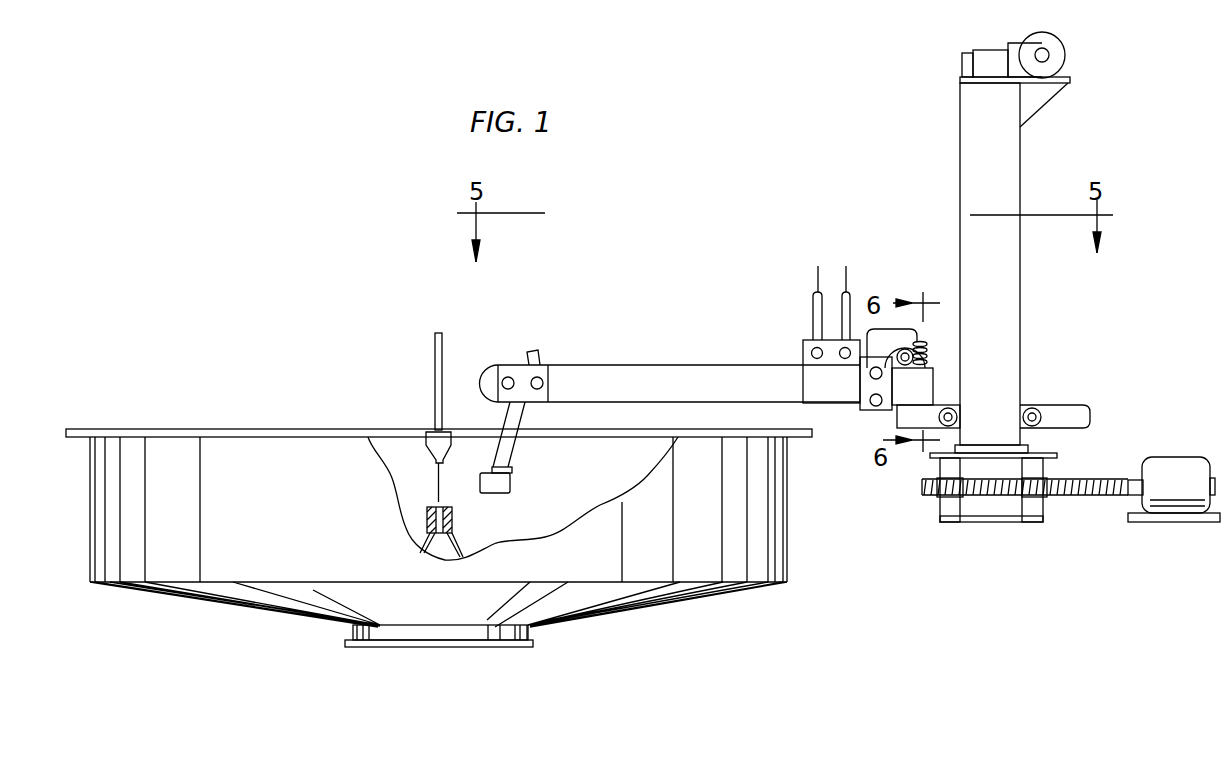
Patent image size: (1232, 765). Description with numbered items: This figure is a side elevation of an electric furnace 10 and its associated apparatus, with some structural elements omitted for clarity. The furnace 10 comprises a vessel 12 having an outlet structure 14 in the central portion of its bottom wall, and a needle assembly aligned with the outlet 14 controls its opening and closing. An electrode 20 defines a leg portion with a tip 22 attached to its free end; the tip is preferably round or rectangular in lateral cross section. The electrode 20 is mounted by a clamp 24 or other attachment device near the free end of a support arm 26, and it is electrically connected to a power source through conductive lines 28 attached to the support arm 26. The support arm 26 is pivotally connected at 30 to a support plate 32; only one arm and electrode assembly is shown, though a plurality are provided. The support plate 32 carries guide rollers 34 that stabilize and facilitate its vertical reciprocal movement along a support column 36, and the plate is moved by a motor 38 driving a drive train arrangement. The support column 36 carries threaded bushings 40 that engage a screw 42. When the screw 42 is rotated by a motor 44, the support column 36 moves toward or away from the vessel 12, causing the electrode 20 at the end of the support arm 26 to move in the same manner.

The furnace 10 is at (884, 148).
The vessel 12 is at (236, 437).
The outlet structure 14 is at (453, 521).
The electrode 20 is at (517, 421).
The tip 22 is at (503, 487).
The clamp 24 is at (532, 373).
The support arm 26 is at (695, 378).
The conductive lines 28 is at (852, 322).
The pivotal connection 30 is at (936, 345).
The support plate 32 is at (900, 423).
The guide rollers 34 is at (953, 403).
The support column 36 is at (1008, 153).
The motor 38 is at (1058, 50).
The threaded bushings 40 is at (947, 490).
The screw 42 is at (1102, 500).
The motor 44 is at (1180, 467).